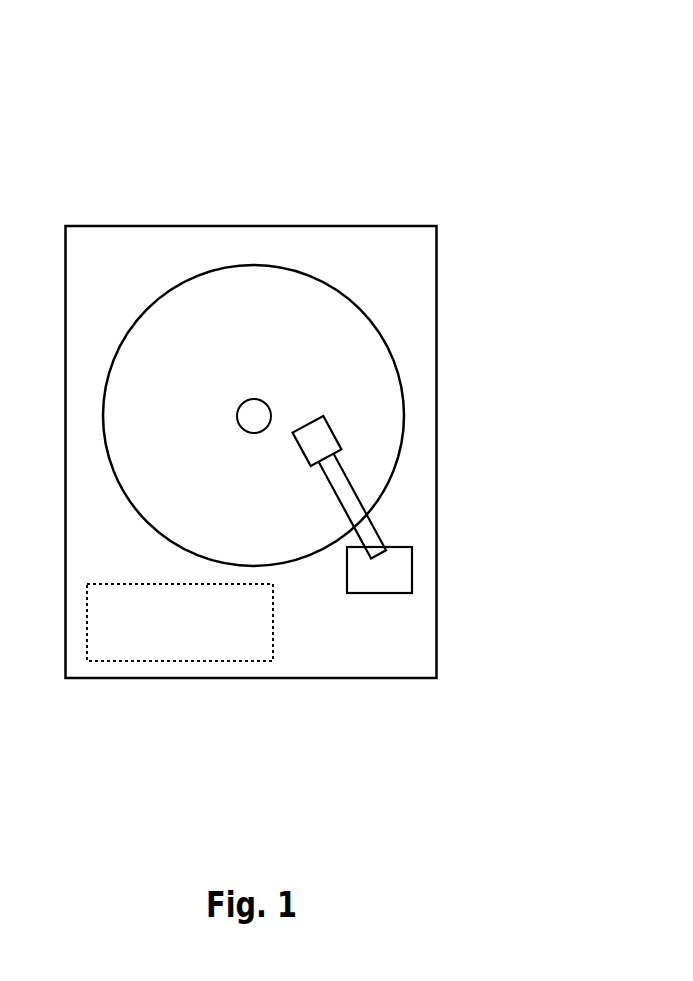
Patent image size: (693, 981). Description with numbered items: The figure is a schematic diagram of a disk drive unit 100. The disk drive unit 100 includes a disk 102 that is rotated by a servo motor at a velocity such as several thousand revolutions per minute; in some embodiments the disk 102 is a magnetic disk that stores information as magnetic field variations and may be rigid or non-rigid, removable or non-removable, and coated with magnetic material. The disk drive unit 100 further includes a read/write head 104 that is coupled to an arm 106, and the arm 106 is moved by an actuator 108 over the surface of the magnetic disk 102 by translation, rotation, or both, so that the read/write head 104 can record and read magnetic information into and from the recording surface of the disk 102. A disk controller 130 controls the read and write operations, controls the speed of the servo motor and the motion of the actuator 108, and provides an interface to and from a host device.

The disk drive unit 100 is at (455, 73).
The disk 102 is at (160, 300).
The read/write head 104 is at (362, 441).
The arm 106 is at (362, 494).
The actuator 108 is at (347, 575).
The disk controller 130 is at (202, 650).